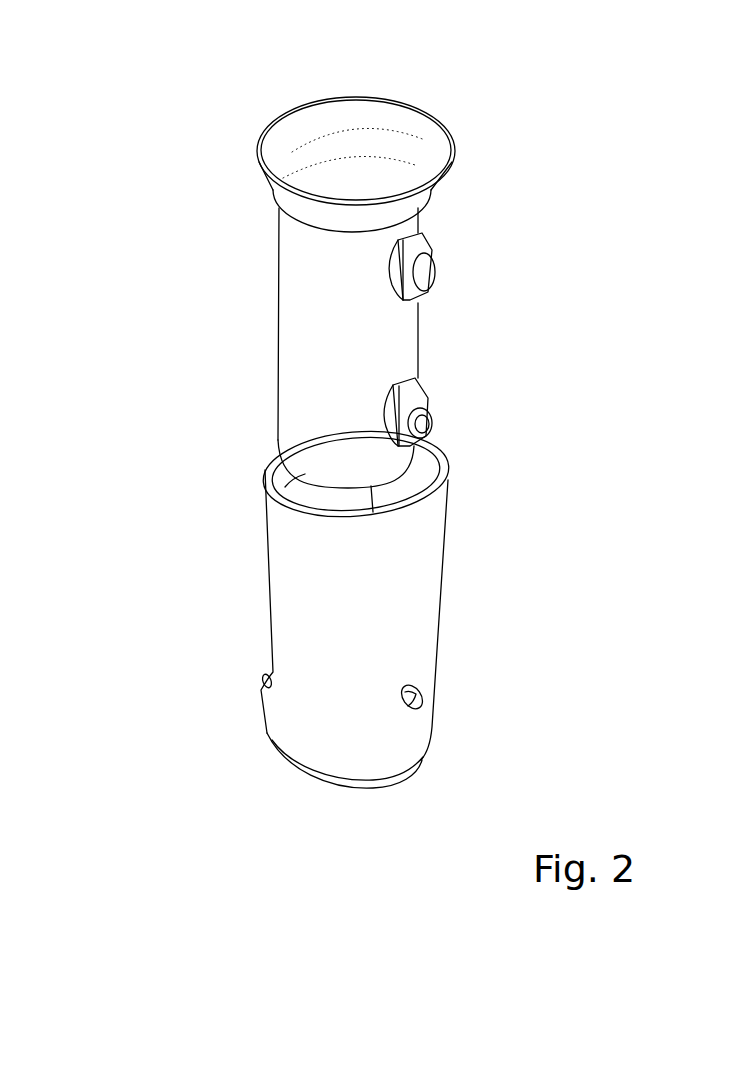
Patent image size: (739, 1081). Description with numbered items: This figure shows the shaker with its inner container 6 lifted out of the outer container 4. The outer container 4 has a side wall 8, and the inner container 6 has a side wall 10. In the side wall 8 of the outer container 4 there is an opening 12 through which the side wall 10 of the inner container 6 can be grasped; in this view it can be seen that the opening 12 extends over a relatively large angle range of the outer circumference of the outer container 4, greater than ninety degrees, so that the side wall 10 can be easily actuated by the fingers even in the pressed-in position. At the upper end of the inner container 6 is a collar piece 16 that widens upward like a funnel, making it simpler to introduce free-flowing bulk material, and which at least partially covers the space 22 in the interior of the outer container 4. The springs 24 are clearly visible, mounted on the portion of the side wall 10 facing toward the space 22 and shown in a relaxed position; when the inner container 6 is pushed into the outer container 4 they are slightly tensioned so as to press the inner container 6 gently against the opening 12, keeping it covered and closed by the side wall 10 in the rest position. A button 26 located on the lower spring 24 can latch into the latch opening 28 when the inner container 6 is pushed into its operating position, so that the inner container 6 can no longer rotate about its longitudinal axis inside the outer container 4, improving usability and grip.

The outer container 4 is at (441, 577).
The inner container 6 is at (279, 287).
The side wall 8 is at (366, 628).
The side wall 10 is at (348, 332).
The opening 12 is at (254, 574).
The collar piece 16 is at (294, 100).
The space 22 is at (413, 496).
The springs 24 is at (418, 250).
The button 26 is at (383, 407).
The latch opening 28 is at (422, 694).